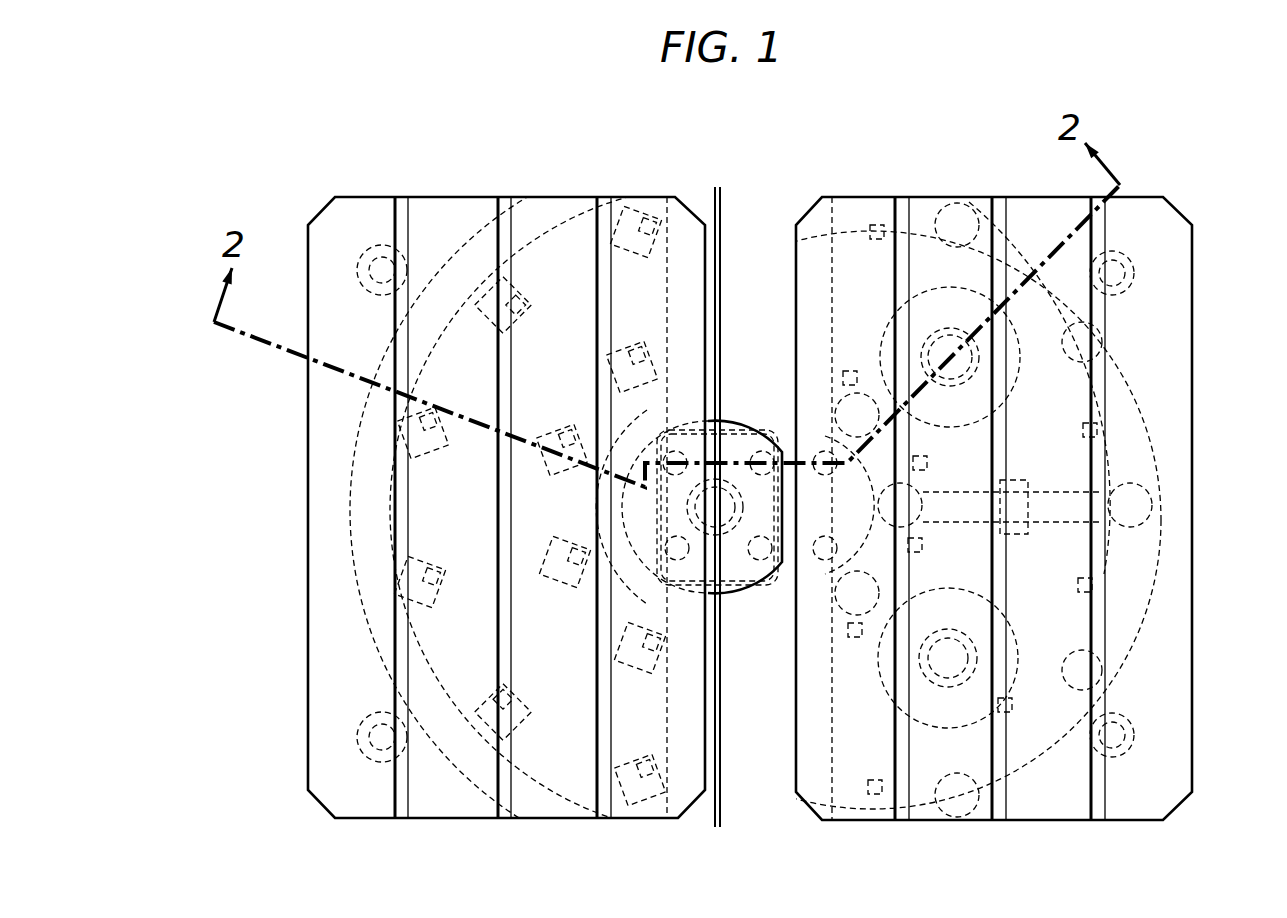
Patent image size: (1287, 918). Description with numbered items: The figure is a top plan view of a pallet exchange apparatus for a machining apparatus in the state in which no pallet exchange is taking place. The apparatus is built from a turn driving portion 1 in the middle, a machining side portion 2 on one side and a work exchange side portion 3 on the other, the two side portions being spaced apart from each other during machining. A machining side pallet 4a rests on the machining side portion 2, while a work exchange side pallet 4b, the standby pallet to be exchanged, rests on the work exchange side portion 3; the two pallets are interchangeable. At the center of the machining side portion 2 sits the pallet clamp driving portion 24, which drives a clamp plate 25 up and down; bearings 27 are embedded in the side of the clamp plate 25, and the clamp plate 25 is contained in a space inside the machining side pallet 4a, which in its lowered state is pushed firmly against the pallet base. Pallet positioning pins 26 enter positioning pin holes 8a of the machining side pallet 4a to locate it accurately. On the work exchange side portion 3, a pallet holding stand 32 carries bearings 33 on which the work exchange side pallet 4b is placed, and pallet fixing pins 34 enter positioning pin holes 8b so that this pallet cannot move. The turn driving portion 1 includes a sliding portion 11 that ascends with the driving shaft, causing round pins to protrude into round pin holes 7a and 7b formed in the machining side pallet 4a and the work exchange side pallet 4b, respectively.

The turn driving portion 1 is at (750, 413).
The machining side portion 2 is at (950, 197).
The work exchange side portion 3 is at (497, 180).
The machining side pallet 4a is at (885, 197).
The work exchange side pallet 4b is at (565, 210).
The round pin hole 7a is at (825, 447).
The round pin hole 7b is at (682, 457).
The positioning pin hole 8a is at (1135, 262).
The positioning pin hole 8b is at (370, 252).
The sliding portion 11 is at (767, 455).
The pallet clamp driving portion 24 is at (950, 655).
The clamp plate 25 is at (1058, 467).
The pallet positioning pin 26 is at (1115, 265).
The bearing 27 is at (1095, 432).
The pallet holding stand 32 is at (410, 450).
The bearing 33 is at (636, 222).
The pallet fixing pin 34 is at (386, 262).